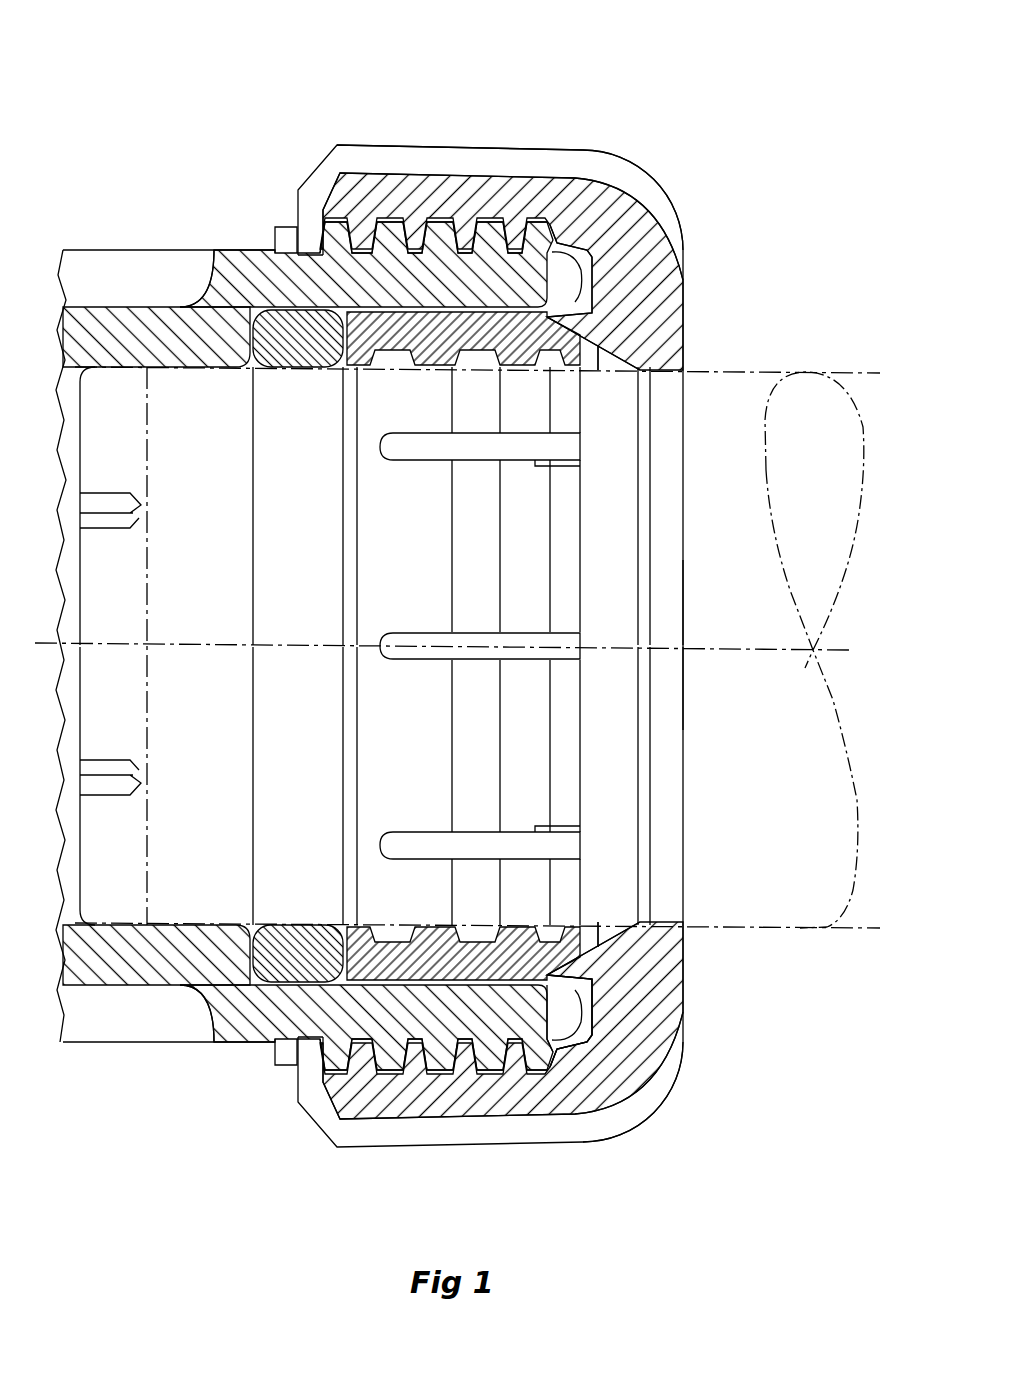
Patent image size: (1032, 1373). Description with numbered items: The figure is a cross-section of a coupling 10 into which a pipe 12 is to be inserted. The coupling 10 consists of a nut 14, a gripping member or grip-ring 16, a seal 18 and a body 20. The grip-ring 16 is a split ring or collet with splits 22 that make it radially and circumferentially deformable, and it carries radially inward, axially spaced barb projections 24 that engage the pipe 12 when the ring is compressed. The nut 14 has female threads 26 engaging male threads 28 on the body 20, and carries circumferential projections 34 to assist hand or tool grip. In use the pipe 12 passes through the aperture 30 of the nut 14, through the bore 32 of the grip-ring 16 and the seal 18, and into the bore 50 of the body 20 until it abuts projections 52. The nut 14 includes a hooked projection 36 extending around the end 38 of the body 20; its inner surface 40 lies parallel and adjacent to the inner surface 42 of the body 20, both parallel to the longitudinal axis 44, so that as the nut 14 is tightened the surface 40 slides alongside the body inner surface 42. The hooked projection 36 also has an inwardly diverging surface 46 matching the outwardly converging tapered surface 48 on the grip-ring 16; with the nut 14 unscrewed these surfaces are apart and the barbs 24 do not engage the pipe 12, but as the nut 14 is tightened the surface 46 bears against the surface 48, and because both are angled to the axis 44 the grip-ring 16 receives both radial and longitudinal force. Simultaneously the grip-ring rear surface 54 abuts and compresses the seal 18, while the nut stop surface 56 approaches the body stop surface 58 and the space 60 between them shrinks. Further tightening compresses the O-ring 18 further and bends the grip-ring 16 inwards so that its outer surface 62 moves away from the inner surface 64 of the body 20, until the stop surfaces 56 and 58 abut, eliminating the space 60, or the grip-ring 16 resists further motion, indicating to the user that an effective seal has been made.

The coupling 10 is at (484, 103).
The pipe 12 is at (865, 427).
The nut 14 is at (566, 152).
The grip-ring 16 is at (330, 300).
The seal 18 is at (297, 340).
The body 20 is at (147, 332).
The splits 22 is at (433, 450).
The barb projections 24 is at (452, 360).
The female threads 26 is at (528, 148).
The male threads 28 is at (397, 215).
The aperture 30 is at (702, 680).
The bore 32 is at (613, 576).
The projections 34 is at (623, 173).
The hooked projection 36 is at (596, 345).
The end 38 is at (502, 350).
The inner surface 40 is at (555, 243).
The inner surface 42 is at (395, 348).
The longitudinal axis 44 is at (707, 650).
The inwardly diverging surface 46 is at (598, 350).
The outwardly converging tapered surface 48 is at (572, 310).
The bore 50 is at (180, 845).
The projections 52 is at (108, 770).
The rear surface 54 is at (294, 921).
The nut stop surface 56 is at (548, 240).
The body stop surface 58 is at (572, 251).
The space 60 is at (560, 1017).
The outer surface 62 is at (510, 990).
The inner surface 64 is at (447, 975).